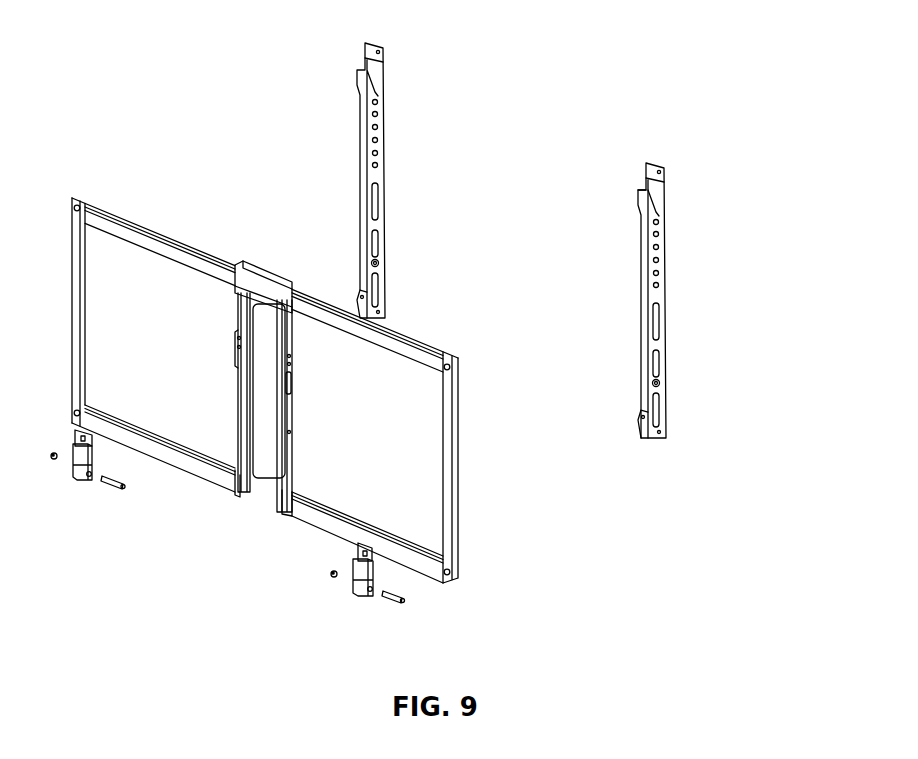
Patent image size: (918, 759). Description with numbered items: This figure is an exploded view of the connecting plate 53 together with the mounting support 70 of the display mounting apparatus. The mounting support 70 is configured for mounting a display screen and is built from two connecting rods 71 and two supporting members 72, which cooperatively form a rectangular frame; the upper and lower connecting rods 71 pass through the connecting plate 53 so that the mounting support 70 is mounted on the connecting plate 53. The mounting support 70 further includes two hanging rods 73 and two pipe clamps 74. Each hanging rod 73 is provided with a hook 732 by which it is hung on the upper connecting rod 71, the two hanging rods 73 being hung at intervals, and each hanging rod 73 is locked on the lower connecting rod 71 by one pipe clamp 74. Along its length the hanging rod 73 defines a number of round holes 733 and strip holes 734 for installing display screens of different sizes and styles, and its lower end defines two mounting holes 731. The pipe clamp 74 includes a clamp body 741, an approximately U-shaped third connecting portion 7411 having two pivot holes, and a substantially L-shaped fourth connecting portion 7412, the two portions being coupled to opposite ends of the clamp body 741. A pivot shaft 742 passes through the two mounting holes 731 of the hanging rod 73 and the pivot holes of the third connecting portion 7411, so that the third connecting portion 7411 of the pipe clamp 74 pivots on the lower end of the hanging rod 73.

The mounting support 70 is at (506, 148).
The connecting rod 71 is at (172, 240).
The supporting member 72 is at (83, 313).
The hanging rod 73 is at (384, 141).
The mounting hole 731 is at (661, 421).
The hook 732 is at (659, 195).
The round hole 733 is at (659, 244).
The strip hole 734 is at (658, 325).
The pipe clamp 74 is at (73, 461).
The clamp body 741 is at (325, 595).
The third connecting portion 7411 is at (367, 594).
The fourth connecting portion 7412 is at (358, 547).
The pivot shaft 742 is at (398, 597).
The connecting plate 53 is at (268, 270).